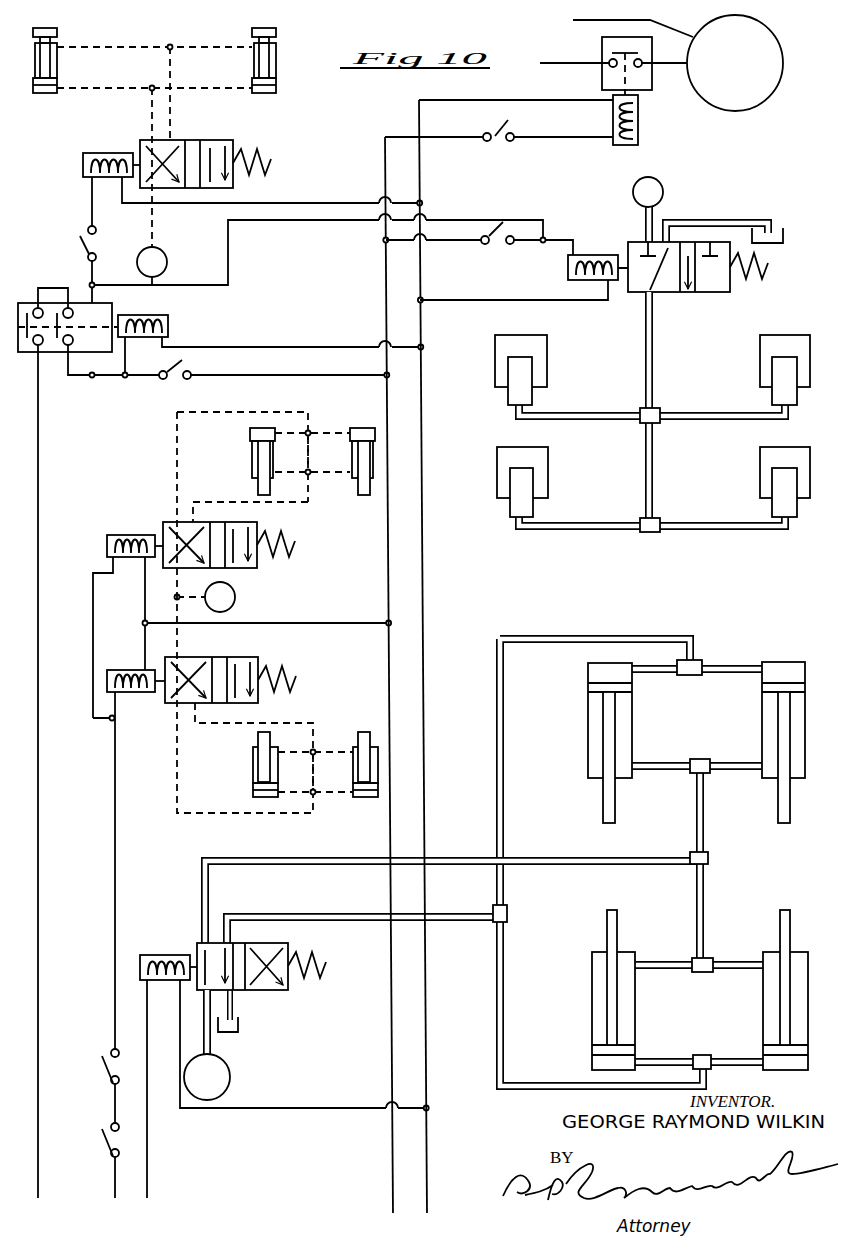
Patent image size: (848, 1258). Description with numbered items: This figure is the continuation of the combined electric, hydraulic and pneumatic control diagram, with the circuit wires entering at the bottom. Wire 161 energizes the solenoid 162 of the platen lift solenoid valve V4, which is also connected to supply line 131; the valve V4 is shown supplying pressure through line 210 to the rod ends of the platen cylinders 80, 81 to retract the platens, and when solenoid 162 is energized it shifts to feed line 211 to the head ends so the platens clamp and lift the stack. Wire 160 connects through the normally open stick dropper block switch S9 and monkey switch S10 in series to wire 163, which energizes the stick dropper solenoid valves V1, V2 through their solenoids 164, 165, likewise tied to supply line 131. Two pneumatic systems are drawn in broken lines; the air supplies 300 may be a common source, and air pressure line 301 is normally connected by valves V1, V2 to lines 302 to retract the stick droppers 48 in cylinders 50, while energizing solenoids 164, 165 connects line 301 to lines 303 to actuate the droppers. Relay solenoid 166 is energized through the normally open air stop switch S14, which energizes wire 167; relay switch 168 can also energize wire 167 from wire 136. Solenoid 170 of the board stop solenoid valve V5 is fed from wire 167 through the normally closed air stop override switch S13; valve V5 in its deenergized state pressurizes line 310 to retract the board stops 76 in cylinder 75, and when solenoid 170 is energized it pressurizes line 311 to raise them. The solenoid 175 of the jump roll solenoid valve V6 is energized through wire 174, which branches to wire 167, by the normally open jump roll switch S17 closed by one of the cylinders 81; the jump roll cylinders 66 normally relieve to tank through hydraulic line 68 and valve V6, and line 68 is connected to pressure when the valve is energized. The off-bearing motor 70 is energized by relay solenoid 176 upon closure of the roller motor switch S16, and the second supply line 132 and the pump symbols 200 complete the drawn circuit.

The off-bearing motor 70 is at (775, 36).
The relay solenoid 176 is at (640, 131).
The pump 200 is at (230, 1077).
The board stops 76 is at (57, 32).
The cylinder 75 is at (57, 70).
The line 310 is at (172, 120).
The line 311 is at (151, 108).
The board stop solenoid valve V5 is at (228, 140).
The solenoid 170 is at (106, 153).
The air stop override switch S13 is at (84, 243).
The air supplies 300 is at (167, 262).
The wire 174 is at (228, 263).
The relay switch 168 is at (18, 320).
The relay solenoid 166 is at (148, 316).
The wire 167 is at (108, 380).
The air stop switch S14 is at (165, 388).
The wire 136 is at (38, 462).
The lines 303 is at (177, 465).
The lines 302 is at (270, 502).
The cylinders 50 is at (350, 455).
The stick droppers 48 is at (360, 492).
The solenoid 165 is at (119, 535).
The stick dropper solenoid valve V2 is at (257, 568).
The air pressure line 301 is at (178, 633).
The stick dropper solenoid valve V1 is at (258, 658).
The solenoid 164 is at (126, 692).
The wire 163 is at (115, 850).
The line 210 is at (258, 857).
The line 211 is at (292, 913).
The platen cylinders 80 is at (762, 718).
The platen cylinders 81 is at (763, 998).
The platen lift solenoid valve V4 is at (270, 990).
The solenoid 162 is at (165, 955).
The monkey switch S10 is at (104, 1065).
The stick dropper block switch S9 is at (104, 1138).
The wire 160 is at (118, 1178).
The wire 161 is at (147, 1191).
The conductor 132 is at (392, 1168).
The supply line 131 is at (427, 1168).
The roller motor switch S16 is at (500, 143).
The jump roll switch S17 is at (503, 222).
The solenoid 175 is at (600, 255).
The jump roll solenoid valve V6 is at (680, 292).
The hydraulic line 68 is at (645, 335).
The jump roll cylinders 66 is at (547, 365).